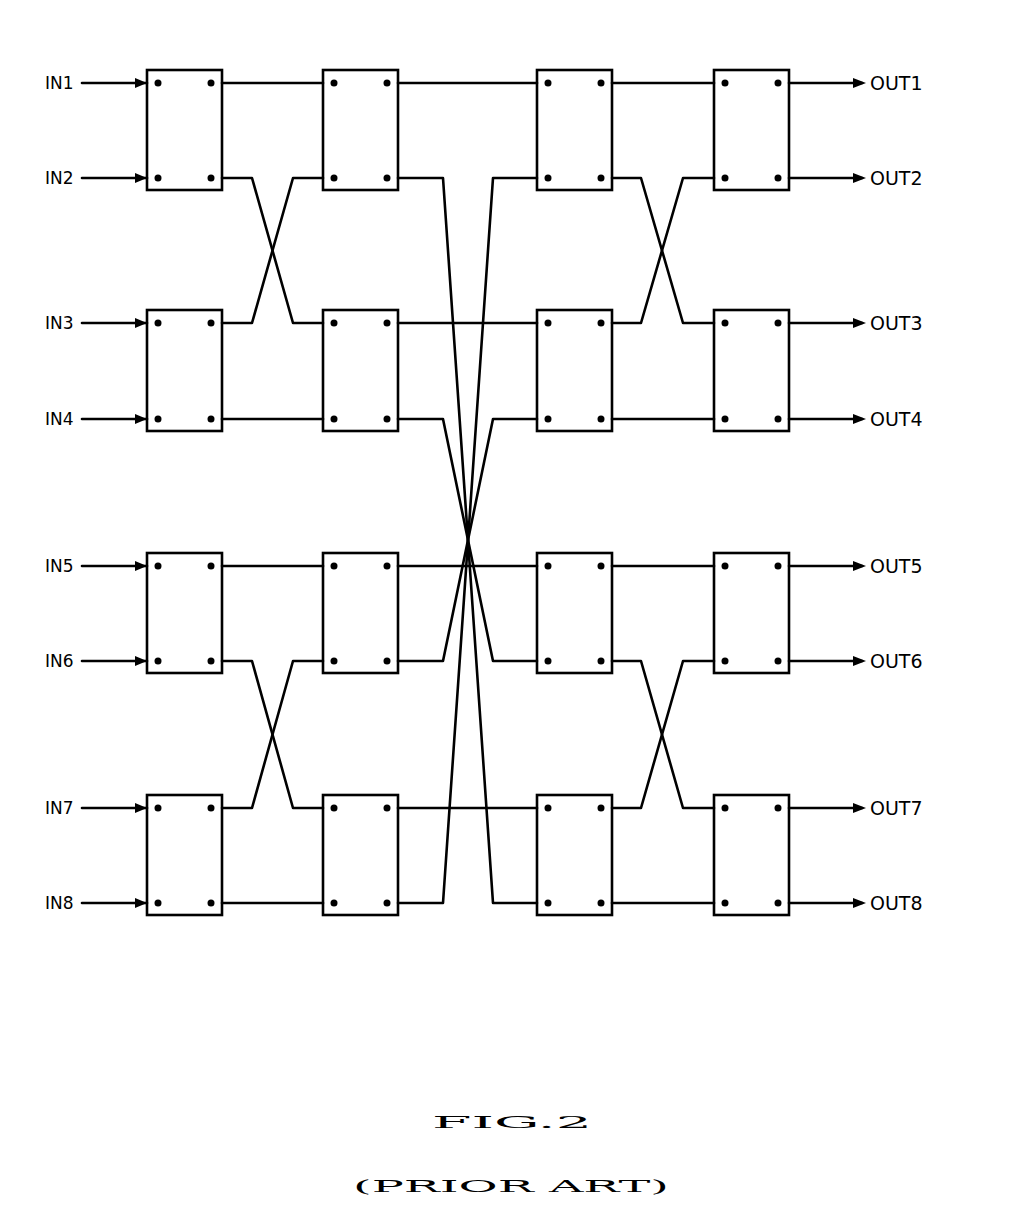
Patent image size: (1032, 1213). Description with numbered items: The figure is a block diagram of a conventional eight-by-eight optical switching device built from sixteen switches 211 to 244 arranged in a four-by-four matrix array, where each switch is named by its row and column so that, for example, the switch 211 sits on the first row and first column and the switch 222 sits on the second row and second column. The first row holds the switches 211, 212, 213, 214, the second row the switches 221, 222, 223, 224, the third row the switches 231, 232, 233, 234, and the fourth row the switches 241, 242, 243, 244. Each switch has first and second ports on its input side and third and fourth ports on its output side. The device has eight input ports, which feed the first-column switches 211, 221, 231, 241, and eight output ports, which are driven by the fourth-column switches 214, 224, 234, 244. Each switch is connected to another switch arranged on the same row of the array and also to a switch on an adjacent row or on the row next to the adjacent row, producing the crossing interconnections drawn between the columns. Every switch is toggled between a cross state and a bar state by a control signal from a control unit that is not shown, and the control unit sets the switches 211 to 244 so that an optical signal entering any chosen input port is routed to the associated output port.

The switch 211 is at (185, 190).
The switch 212 is at (361, 190).
The switch 213 is at (575, 190).
The switch 214 is at (752, 190).
The switch 221 is at (185, 431).
The switch 222 is at (361, 431).
The switch 223 is at (575, 431).
The switch 224 is at (752, 431).
The switch 231 is at (185, 673).
The switch 232 is at (361, 673).
The switch 233 is at (575, 673).
The switch 234 is at (752, 673).
The switch 241 is at (185, 915).
The switch 242 is at (361, 915).
The switch 243 is at (575, 915).
The switch 244 is at (752, 915).